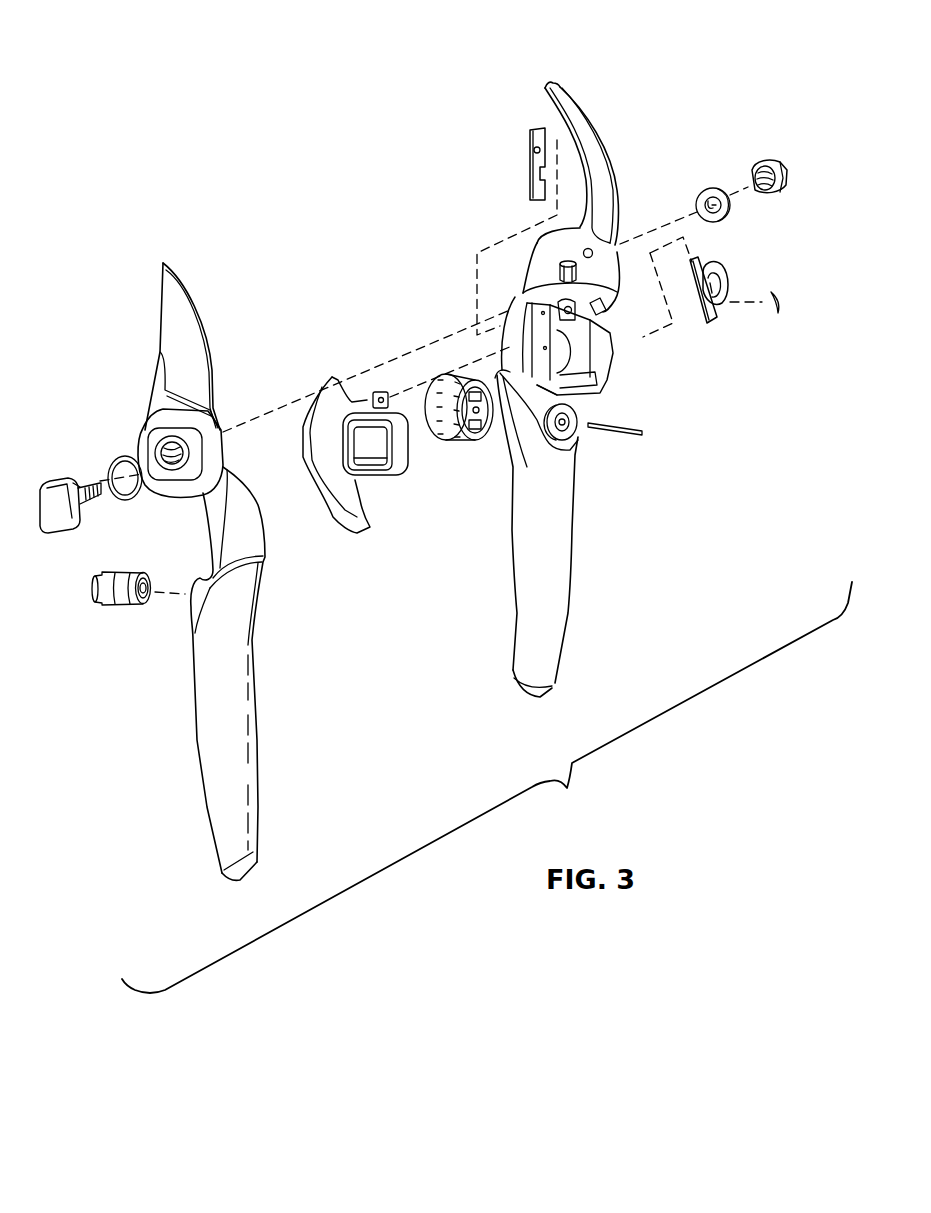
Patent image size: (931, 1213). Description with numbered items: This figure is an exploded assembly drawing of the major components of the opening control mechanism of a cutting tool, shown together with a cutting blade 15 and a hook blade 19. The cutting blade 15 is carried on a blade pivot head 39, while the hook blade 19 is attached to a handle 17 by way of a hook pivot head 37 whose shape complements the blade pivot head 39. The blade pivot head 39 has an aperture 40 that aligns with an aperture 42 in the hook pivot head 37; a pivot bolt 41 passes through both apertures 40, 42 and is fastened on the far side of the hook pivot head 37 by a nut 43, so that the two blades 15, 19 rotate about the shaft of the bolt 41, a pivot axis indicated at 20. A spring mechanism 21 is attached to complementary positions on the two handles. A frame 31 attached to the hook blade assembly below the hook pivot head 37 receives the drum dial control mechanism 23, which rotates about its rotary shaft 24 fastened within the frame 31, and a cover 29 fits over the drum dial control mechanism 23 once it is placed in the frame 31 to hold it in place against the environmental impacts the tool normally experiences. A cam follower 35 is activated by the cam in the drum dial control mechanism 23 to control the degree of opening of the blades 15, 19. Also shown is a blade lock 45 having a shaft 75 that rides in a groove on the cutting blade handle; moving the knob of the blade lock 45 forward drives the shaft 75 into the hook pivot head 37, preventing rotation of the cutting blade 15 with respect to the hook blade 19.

The cutting blade 15 is at (160, 357).
The handle 17 is at (578, 578).
The hook blade 19 is at (586, 110).
The pivot axis 20 is at (398, 351).
The spring mechanism 21 is at (119, 600).
The drum dial control mechanism 23 is at (451, 441).
The rotary shaft 24 is at (628, 426).
The cover 29 is at (307, 407).
The frame 31 is at (610, 353).
The cam follower 35 is at (530, 157).
The hook pivot head 37 is at (530, 263).
The blade pivot head 39 is at (143, 428).
The aperture 40 is at (175, 463).
The pivot bolt 41 is at (55, 524).
The aperture 42 is at (605, 300).
The nut 43 is at (776, 167).
The blade lock 45 is at (729, 282).
The shaft 75 is at (713, 326).